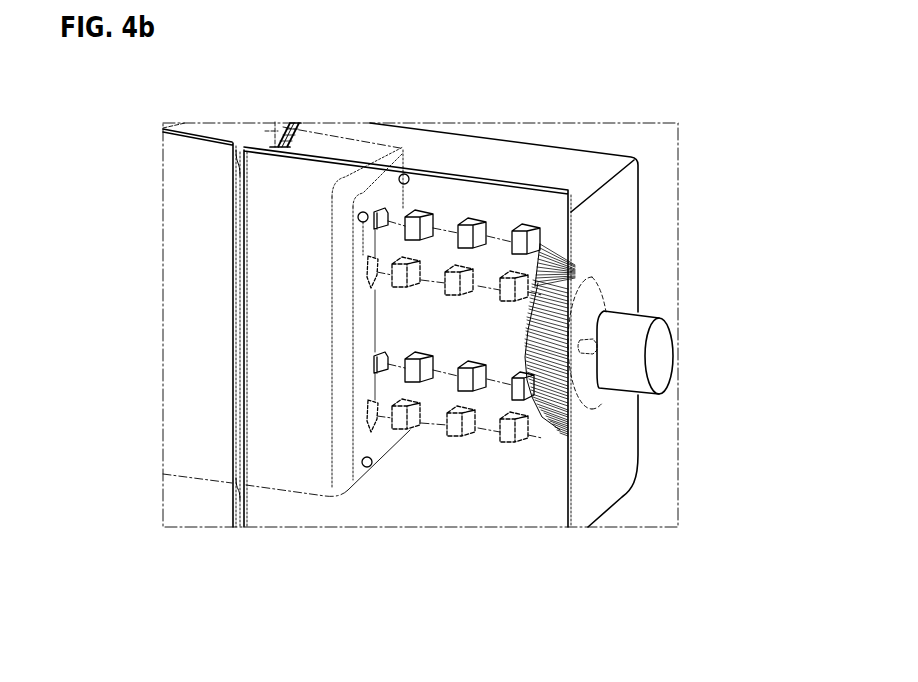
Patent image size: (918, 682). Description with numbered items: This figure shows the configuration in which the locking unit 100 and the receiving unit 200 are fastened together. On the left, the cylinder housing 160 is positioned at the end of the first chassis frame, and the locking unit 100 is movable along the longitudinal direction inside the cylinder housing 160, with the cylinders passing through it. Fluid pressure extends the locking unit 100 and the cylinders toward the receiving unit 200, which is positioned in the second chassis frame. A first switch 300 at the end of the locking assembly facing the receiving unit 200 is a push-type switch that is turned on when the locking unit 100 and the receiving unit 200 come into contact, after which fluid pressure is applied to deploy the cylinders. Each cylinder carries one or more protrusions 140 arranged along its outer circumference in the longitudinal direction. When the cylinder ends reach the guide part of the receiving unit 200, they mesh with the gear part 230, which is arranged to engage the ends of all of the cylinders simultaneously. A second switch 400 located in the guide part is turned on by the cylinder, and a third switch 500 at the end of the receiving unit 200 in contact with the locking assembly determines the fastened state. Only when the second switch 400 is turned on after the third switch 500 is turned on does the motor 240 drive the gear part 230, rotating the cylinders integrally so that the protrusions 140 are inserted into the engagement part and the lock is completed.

The locking unit 100 is at (298, 172).
The protrusion 140 is at (410, 430).
The cylinder housing 160 is at (184, 514).
The receiving unit 200 is at (284, 512).
The gear part 230 is at (590, 308).
The motor 240 is at (658, 362).
The first switch 300 is at (268, 132).
The second switch 400 is at (580, 274).
The third switch 500 is at (363, 212).